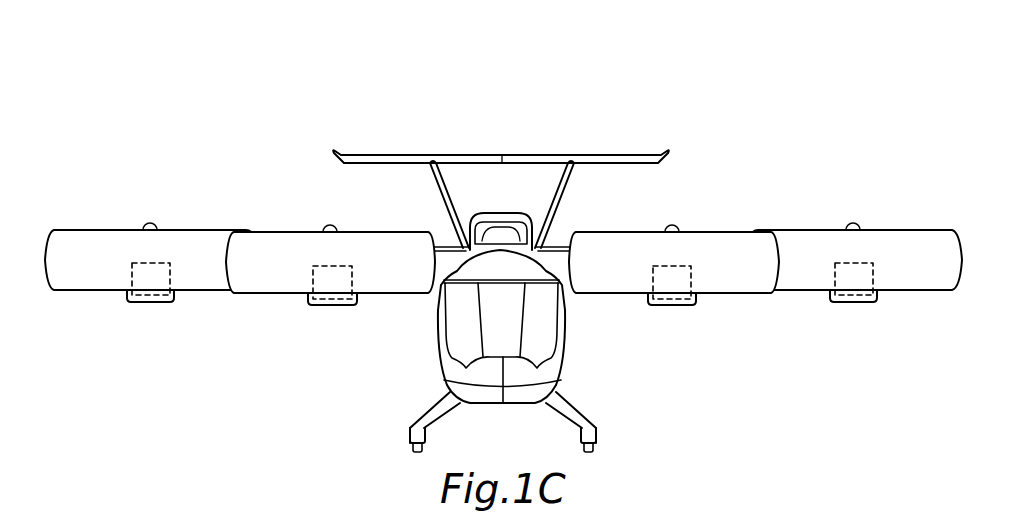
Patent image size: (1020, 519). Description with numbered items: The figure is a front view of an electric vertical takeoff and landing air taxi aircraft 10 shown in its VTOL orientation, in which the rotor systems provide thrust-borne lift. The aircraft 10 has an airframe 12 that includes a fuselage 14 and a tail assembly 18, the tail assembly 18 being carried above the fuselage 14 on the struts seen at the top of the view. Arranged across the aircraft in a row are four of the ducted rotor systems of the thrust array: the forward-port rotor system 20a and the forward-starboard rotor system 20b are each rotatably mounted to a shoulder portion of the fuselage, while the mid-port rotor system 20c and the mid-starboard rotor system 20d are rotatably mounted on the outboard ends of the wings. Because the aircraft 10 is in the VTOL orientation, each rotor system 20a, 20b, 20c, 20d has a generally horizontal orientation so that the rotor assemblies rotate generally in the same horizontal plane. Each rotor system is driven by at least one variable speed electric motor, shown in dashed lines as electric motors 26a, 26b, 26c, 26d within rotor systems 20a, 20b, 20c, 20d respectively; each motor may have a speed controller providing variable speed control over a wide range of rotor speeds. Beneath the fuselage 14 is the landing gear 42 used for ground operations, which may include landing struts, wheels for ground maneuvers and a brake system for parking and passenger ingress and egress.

The aircraft 10 is at (580, 102).
The airframe 12 is at (560, 378).
The fuselage 14 is at (565, 356).
The tail assembly 18 is at (512, 153).
The forward-port rotor system 20a is at (713, 240).
The forward-starboard rotor system 20b is at (283, 240).
The mid-port rotor system 20c is at (893, 230).
The mid-starboard rotor system 20d is at (101, 231).
The variable speed electric motor 26a is at (676, 303).
The variable speed electric motor 26b is at (327, 303).
The variable speed electric motor 26c is at (855, 300).
The variable speed electric motor 26d is at (146, 300).
The landing gear 42 is at (426, 413).